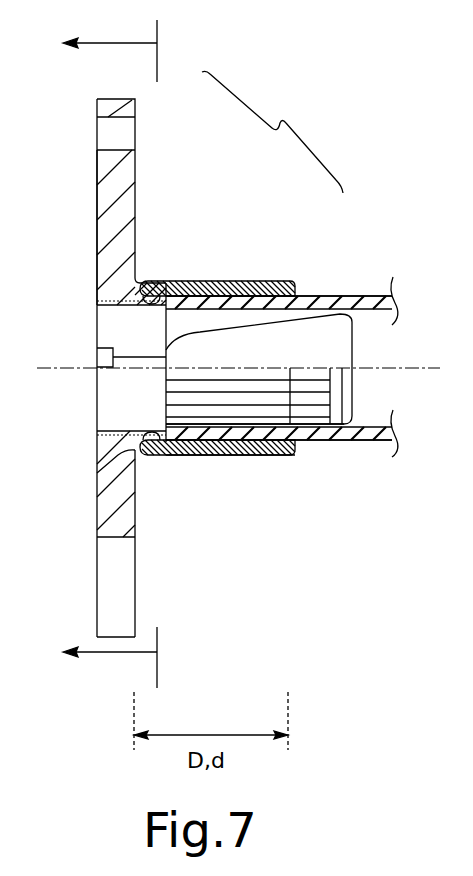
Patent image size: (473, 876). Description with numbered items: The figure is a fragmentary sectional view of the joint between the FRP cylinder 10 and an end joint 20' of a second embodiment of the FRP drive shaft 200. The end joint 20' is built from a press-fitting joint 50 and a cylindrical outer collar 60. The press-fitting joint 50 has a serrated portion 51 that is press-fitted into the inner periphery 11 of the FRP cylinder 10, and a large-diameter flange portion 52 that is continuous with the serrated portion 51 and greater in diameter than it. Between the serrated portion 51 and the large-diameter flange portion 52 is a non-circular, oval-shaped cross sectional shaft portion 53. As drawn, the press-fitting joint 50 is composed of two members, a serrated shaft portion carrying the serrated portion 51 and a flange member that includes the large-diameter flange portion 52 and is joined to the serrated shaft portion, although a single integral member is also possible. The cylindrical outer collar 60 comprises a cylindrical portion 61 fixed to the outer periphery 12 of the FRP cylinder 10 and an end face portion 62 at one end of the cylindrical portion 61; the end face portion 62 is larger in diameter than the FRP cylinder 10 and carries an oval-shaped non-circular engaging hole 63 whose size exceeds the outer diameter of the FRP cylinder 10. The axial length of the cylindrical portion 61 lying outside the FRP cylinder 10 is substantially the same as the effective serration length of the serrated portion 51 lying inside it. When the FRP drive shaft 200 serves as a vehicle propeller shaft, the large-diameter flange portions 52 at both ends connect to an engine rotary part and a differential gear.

The press-fitting joint 50 is at (140, 128).
The large-diameter flange portion 52 is at (105, 190).
The cylindrical outer collar 60 is at (263, 260).
The non-circular cross sectional shaft portion 53 is at (158, 284).
The non-circular engaging hole 63 is at (153, 458).
The end face portion 62 is at (97, 473).
The cylindrical portion 61 is at (240, 458).
The FRP cylinder 10 is at (370, 288).
The outer periphery 12 is at (340, 295).
The inner periphery 11 is at (367, 410).
The serrated portion 51 is at (310, 413).
The end joint 20' is at (272, 132).
The FRP drive shaft 200 is at (357, 114).